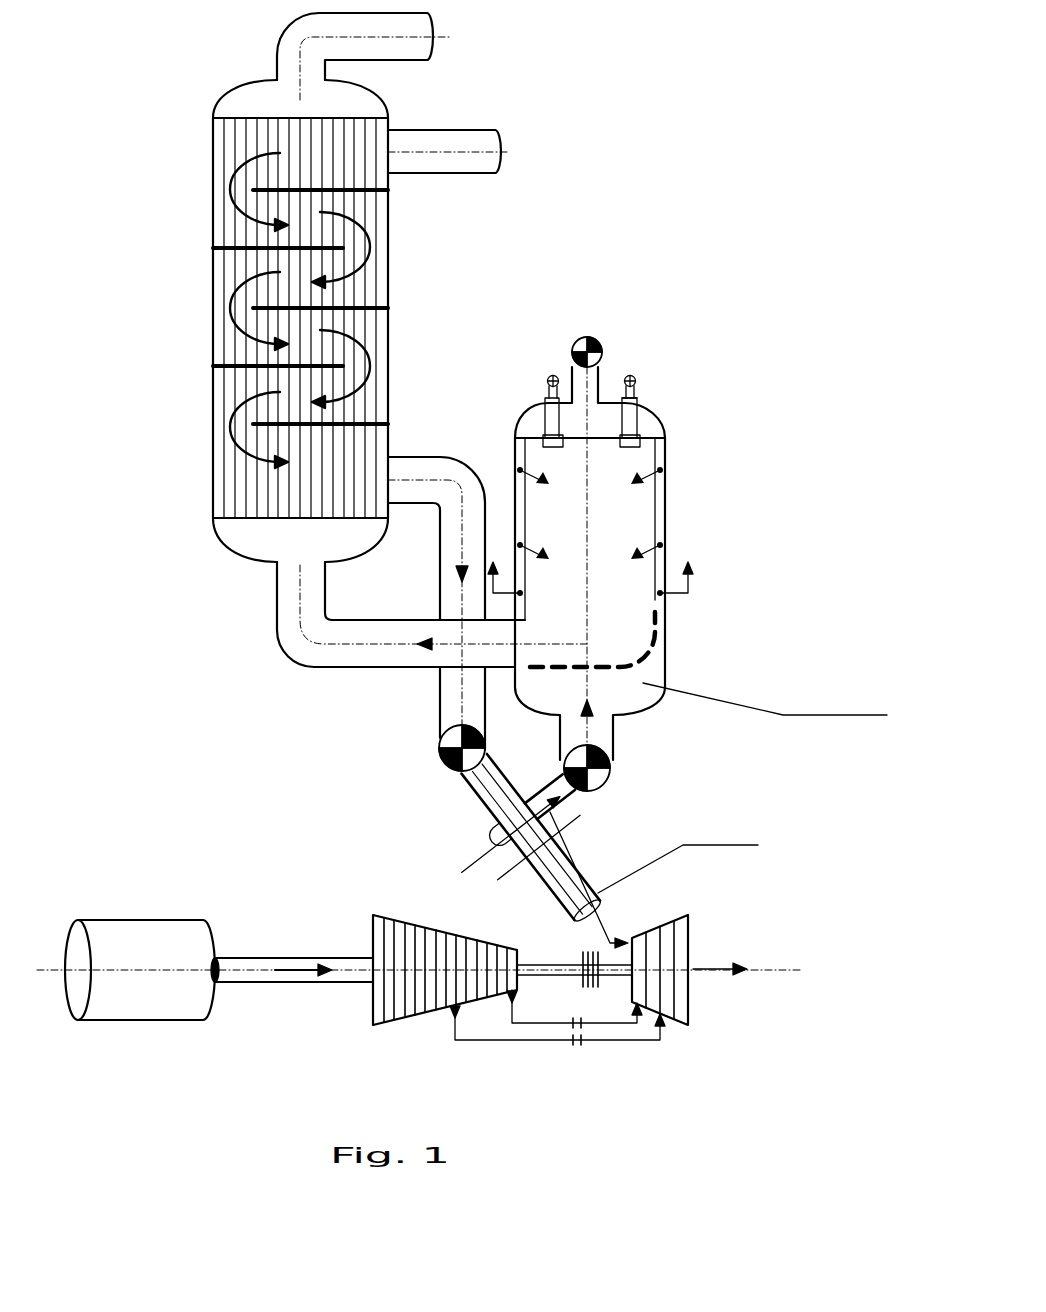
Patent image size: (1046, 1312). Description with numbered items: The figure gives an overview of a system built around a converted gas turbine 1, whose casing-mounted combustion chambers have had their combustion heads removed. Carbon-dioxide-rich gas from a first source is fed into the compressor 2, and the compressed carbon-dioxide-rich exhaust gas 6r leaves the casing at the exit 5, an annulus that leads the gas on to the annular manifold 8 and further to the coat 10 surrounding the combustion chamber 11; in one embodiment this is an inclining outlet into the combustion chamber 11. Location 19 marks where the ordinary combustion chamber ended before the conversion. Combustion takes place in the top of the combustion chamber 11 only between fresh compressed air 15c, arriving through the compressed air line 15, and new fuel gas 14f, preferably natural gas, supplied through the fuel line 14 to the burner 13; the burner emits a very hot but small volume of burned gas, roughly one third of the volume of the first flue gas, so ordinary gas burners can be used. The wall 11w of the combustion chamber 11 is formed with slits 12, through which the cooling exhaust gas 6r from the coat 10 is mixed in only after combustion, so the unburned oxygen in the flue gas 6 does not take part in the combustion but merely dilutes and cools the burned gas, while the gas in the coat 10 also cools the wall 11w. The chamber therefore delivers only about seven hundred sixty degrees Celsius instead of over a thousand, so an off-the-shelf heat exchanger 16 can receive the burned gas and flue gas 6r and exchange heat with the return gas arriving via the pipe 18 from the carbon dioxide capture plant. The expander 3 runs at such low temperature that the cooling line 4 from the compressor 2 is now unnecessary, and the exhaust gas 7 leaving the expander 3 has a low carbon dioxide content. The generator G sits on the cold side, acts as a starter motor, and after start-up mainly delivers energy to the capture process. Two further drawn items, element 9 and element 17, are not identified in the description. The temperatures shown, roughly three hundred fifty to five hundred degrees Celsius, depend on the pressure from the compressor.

The converted gas turbine 1 is at (553, 981).
The compressor 2 is at (410, 920).
The expander 3 is at (664, 947).
The cooling line 4 is at (557, 1009).
The exit 5 is at (577, 938).
The flue gas 6 is at (307, 967).
The compressed CO2-rich exhaust gas 6r is at (557, 813).
The exhaust gas 7 is at (730, 970).
The annular manifold 8 is at (583, 763).
The valve at heat exchanger outlet 9 is at (462, 750).
The coat 10 is at (640, 712).
The combustion chamber 11 is at (602, 527).
The wall 11w is at (657, 623).
The slits 12 is at (590, 531).
The burner 13 is at (627, 416).
The fuel line 14 is at (548, 378).
The natural gas 14f is at (634, 378).
The compressed air line 15 is at (663, 323).
The compressed air 15c is at (600, 342).
The heat exchanger 16 is at (390, 306).
The steam outlet 17 is at (450, 37).
The pipe 18 is at (520, 152).
The end of ordinary combustion chamber 19 is at (525, 868).
The generator G is at (140, 970).